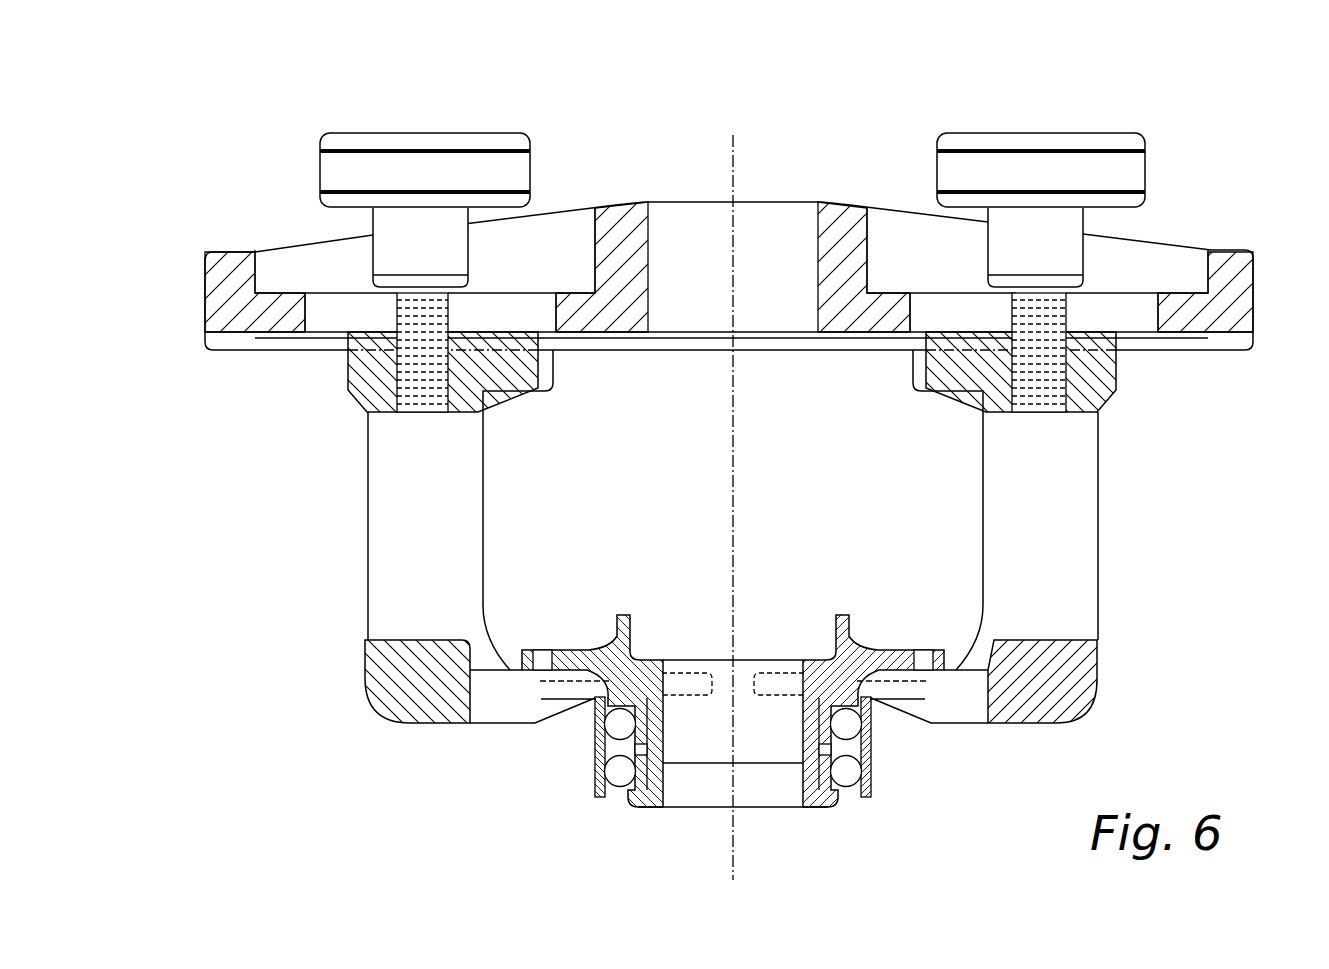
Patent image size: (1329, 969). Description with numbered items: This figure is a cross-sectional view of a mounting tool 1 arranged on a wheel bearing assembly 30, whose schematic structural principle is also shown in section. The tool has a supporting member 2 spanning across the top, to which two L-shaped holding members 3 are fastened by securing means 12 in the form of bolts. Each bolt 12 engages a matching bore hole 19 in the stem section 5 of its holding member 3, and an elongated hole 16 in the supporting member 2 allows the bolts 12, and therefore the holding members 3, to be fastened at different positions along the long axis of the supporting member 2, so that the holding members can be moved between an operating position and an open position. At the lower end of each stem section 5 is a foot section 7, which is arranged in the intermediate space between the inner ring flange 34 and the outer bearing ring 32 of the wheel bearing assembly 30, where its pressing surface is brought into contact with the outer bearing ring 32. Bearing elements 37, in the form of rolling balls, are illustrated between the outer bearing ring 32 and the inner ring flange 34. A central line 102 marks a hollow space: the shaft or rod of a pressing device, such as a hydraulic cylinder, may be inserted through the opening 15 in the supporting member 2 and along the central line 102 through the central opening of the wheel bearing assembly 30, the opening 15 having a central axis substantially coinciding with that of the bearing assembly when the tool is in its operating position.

The mounting tool 1 is at (1238, 142).
The supporting member 2 is at (729, 202).
The L-shaped holding member 3 is at (380, 618).
The stem section 5 is at (423, 502).
The foot section 7 is at (493, 702).
The securing means 12 is at (467, 135).
The opening 15 is at (787, 223).
The elongated hole 16 is at (1140, 307).
The bore hole 19 is at (428, 412).
The wheel bearing assembly 30 is at (708, 730).
The outer bearing ring 32 is at (595, 745).
The inner ring flange 34 is at (592, 650).
The bearing elements 37 is at (620, 724).
The central line 102 is at (733, 150).